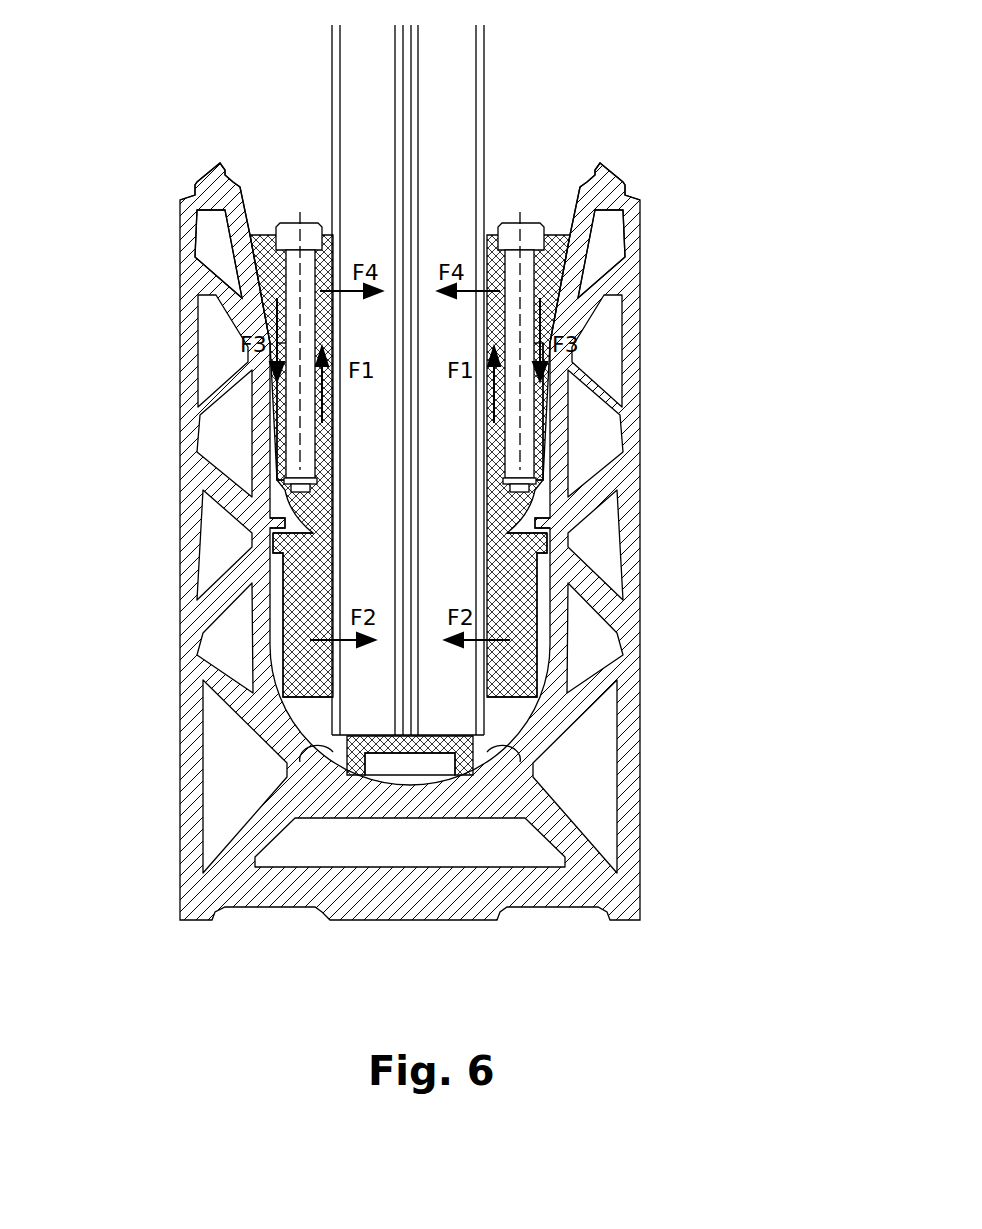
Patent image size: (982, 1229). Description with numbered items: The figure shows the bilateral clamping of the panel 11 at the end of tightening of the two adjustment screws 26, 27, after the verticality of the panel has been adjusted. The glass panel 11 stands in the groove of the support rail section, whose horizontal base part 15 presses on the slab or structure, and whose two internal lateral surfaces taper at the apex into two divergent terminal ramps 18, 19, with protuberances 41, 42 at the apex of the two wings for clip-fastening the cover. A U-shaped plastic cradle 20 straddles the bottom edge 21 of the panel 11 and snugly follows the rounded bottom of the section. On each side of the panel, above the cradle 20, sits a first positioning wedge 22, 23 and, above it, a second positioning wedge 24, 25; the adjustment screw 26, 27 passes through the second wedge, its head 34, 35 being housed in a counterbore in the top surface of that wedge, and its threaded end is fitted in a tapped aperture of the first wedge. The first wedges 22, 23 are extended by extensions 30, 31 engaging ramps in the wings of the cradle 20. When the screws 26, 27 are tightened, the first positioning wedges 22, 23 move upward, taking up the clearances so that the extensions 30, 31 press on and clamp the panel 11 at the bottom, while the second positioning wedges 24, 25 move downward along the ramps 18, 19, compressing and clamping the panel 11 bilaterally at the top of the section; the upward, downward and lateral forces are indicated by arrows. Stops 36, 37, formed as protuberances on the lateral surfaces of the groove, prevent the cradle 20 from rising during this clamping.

The panel 11 is at (457, 68).
The horizontal base part 15 is at (367, 890).
The divergent terminal ramp 18 is at (237, 240).
The divergent terminal ramp 19 is at (582, 218).
The cradle 20 is at (470, 745).
The bottom edge 21 is at (430, 748).
The first positioning wedge 22 is at (283, 425).
The first positioning wedge 23 is at (535, 408).
The second positioning wedge 24 is at (283, 325).
The second positioning wedge 25 is at (515, 322).
The adjustment screw 26 is at (293, 350).
The adjustment screw 27 is at (547, 327).
The extension 30 is at (300, 645).
The extension 31 is at (520, 645).
The head of the screw 34 is at (294, 221).
The head of the screw 35 is at (531, 219).
The stop 36 is at (268, 521).
The stop 37 is at (552, 519).
The protuberance 41 is at (200, 172).
The protuberance 42 is at (618, 170).